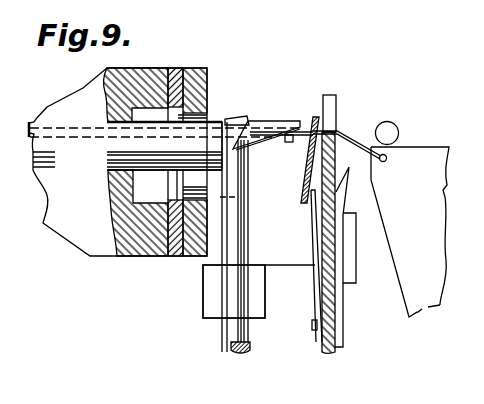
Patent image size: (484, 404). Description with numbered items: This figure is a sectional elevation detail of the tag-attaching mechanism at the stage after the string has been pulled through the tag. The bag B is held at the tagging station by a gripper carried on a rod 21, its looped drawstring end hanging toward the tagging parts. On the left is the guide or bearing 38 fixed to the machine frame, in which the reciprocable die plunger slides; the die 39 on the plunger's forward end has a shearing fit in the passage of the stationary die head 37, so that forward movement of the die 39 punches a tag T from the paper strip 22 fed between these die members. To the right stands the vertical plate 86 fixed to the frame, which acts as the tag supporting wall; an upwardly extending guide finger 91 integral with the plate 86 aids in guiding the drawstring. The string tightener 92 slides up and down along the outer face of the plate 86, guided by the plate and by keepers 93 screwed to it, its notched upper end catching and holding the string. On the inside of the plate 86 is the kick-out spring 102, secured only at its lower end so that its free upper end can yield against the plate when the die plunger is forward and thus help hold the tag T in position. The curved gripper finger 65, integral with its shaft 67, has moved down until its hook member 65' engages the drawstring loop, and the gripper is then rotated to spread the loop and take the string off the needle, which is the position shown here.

The paper strip 22 is at (178, 105).
The stationary die head 37 is at (191, 103).
The guide or bearing 38 is at (87, 228).
The die 39 is at (233, 117).
The curved finger 65 is at (273, 116).
The hook member 65' is at (282, 153).
The rod or shaft 67 is at (232, 333).
The vertical plate 86 is at (326, 297).
The guide finger 91 is at (334, 108).
The string tightener 92 is at (340, 329).
The keepers 93 is at (350, 270).
The kick-out spring 102 is at (311, 236).
The rod 21 is at (387, 125).
The bag B is at (439, 152).
The tag T is at (301, 184).